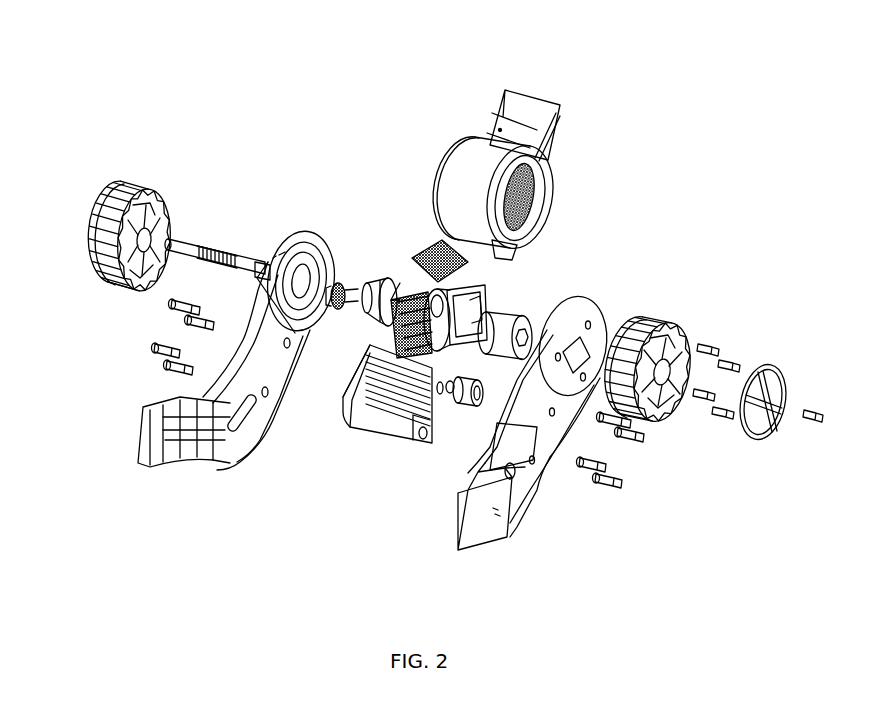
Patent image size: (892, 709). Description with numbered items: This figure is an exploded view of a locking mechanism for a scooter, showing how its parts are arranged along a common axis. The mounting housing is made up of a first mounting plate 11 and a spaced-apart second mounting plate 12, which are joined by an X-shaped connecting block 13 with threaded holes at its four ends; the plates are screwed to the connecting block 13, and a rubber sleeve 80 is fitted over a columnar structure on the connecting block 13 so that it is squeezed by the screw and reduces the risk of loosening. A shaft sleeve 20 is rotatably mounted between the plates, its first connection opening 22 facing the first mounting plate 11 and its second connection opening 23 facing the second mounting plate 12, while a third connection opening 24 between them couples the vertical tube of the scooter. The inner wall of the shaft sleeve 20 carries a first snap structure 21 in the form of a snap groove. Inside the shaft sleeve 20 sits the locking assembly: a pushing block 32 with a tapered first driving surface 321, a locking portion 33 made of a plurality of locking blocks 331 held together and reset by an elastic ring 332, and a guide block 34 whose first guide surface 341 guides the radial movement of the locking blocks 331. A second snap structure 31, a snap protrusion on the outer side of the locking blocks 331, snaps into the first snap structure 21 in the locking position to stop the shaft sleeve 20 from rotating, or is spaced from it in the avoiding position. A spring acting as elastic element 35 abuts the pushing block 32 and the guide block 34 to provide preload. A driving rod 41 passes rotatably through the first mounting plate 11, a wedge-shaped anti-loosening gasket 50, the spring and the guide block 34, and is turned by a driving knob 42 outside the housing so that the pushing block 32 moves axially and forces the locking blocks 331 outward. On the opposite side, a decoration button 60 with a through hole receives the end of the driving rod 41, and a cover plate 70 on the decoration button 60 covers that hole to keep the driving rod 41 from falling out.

The first mounting plate 11 is at (143, 443).
The second mounting plate 12 is at (462, 527).
The connecting block 13 is at (395, 412).
The shaft sleeve 20 is at (511, 137).
The first snap structure 21 is at (466, 268).
The first connection opening 22 is at (433, 163).
The second connection opening 23 is at (533, 208).
The third connection opening 24 is at (530, 88).
The elastic element 35 is at (552, 118).
The second snap structure 31 is at (428, 343).
The pushing block 32 is at (360, 293).
The first driving surface 321 is at (332, 293).
The locking portion 33 is at (437, 308).
The locking blocks 331 is at (420, 365).
The elastic ring 332 is at (427, 299).
The guide block 34 is at (517, 328).
The first guide surface 341 is at (500, 300).
The driving rod 41 is at (168, 248).
The driving knob 42 is at (97, 260).
The anti-loosening gasket 50 is at (293, 273).
The decoration button 60 is at (638, 347).
The cover plate 70 is at (757, 413).
The rubber sleeve 80 is at (467, 388).